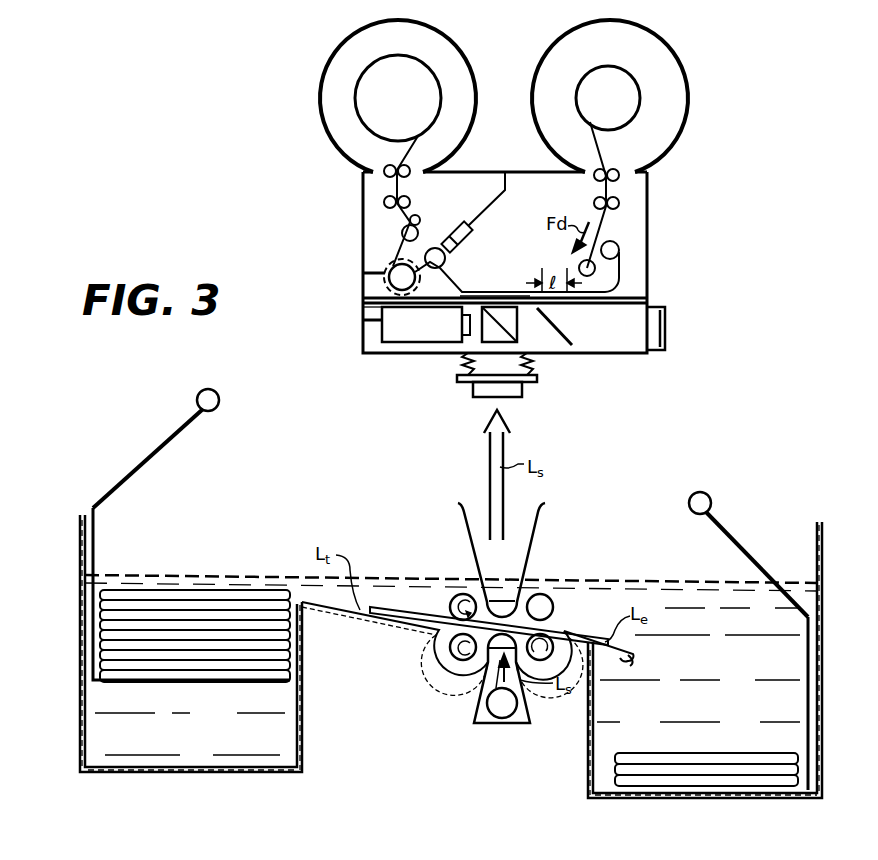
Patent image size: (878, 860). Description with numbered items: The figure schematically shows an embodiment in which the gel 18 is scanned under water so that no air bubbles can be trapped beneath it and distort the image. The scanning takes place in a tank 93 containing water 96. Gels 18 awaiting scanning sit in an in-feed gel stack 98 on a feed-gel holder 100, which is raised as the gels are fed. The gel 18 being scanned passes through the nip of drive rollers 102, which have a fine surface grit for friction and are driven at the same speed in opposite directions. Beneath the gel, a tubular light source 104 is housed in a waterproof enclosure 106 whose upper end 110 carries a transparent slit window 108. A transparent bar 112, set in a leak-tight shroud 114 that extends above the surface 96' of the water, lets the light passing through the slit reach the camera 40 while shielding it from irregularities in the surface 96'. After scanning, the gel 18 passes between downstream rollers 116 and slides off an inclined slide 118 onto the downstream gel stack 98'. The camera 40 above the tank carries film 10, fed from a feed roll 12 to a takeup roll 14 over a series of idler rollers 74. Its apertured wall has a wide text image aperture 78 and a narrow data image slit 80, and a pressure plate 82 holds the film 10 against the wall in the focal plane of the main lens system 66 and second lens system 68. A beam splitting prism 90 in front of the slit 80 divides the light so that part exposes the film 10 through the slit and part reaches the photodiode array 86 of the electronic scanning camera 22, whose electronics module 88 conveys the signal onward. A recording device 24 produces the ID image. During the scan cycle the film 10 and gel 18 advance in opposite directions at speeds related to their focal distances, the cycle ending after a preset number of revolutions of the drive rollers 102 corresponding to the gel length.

The film 10 is at (590, 140).
The feed roll 12 is at (620, 108).
The takeup roll 14 is at (410, 108).
The gel 18 is at (415, 614).
The electronic scanning camera 22 is at (392, 345).
The recording device 24 is at (473, 233).
The camera 40 is at (544, 203).
The first or main lens system 66 is at (530, 392).
The second lens system 68 is at (660, 308).
The idler rollers 74 is at (410, 178).
The text image aperture 78 is at (566, 314).
The data image aperture or slit 80 is at (498, 300).
The pressure plate 82 is at (470, 294).
The photodiode array 86 is at (464, 360).
The electronics module 88 is at (368, 328).
The beam splitting prism 90 is at (534, 360).
The tank 93 is at (822, 532).
The water 96 is at (698, 665).
The surface of the water 96' is at (748, 641).
The in-feed gel stack 98 is at (195, 612).
The downstream gel stack 98' is at (706, 750).
The feed-gel holder 100 is at (237, 686).
The drive rollers 102 is at (455, 594).
The tubular or elongated light source 104 is at (518, 696).
The waterproof enclosure 106 is at (490, 725).
The transparent slit window 108 is at (490, 665).
The upper end 110 is at (474, 674).
The transparent bar 112 is at (505, 600).
The leak-tight enclosure or shroud 114 is at (538, 518).
The downstream rollers 116 is at (545, 612).
The inclined slide 118 is at (645, 661).